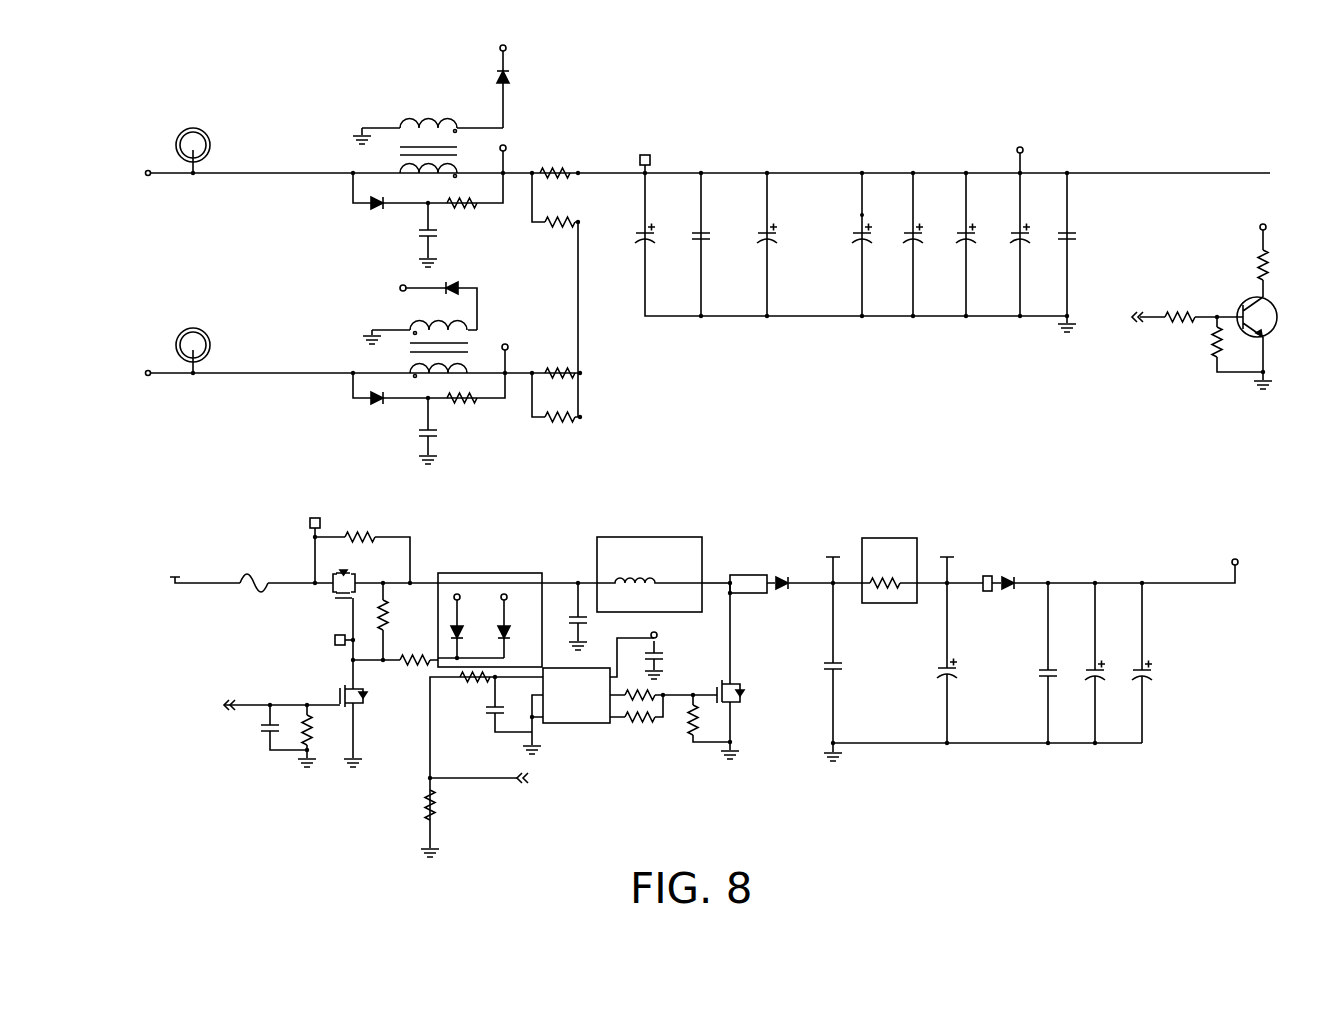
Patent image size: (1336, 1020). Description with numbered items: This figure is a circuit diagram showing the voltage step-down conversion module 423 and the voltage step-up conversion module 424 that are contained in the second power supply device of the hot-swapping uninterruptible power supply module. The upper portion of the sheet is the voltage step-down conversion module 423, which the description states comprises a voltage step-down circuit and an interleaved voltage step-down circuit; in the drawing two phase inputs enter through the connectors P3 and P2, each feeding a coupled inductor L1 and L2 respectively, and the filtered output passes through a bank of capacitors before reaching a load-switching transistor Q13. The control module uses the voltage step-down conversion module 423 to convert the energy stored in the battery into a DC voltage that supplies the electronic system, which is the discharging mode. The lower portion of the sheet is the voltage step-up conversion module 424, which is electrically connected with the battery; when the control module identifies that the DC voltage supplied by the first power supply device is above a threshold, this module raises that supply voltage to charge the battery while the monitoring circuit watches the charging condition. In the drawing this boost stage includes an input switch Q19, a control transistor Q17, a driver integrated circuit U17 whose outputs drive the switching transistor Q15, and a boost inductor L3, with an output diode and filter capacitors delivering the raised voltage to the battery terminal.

The voltage step-down conversion module 423 is at (137, 132).
The voltage step-up conversion module 424 is at (157, 531).
The phase 2 connector P3 is at (193, 132).
The phase 1 connector P2 is at (193, 335).
The inductor L1 is at (428, 136).
The inductor L2 is at (439, 342).
The inductor L3 is at (649, 574).
The transistor Q13 is at (1274, 312).
The MOSFET Q15 is at (745, 688).
The MOSFET Q17 is at (371, 690).
The MOSFET Q19 is at (345, 574).
The driver IC U17 is at (576, 684).